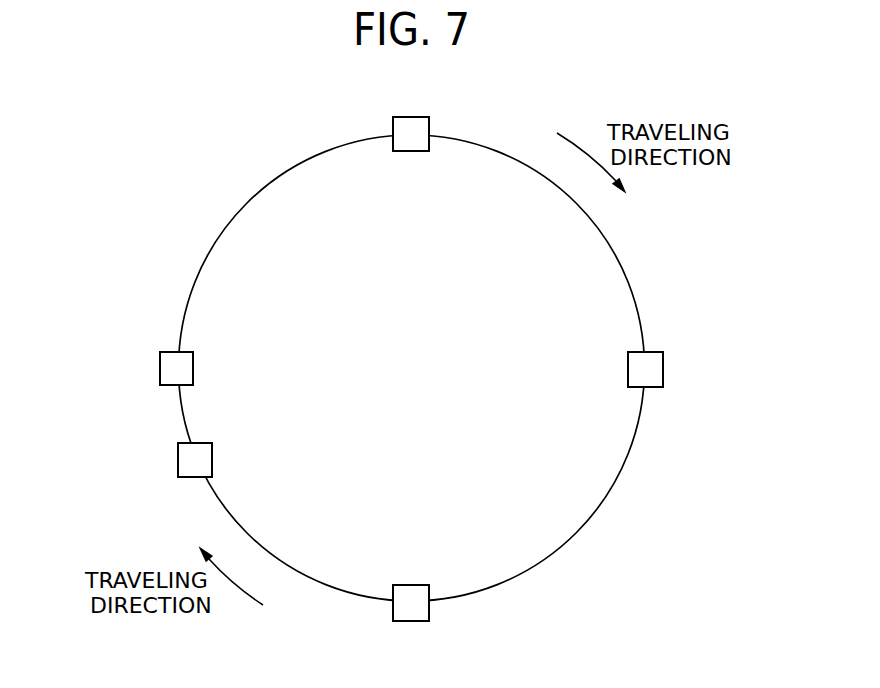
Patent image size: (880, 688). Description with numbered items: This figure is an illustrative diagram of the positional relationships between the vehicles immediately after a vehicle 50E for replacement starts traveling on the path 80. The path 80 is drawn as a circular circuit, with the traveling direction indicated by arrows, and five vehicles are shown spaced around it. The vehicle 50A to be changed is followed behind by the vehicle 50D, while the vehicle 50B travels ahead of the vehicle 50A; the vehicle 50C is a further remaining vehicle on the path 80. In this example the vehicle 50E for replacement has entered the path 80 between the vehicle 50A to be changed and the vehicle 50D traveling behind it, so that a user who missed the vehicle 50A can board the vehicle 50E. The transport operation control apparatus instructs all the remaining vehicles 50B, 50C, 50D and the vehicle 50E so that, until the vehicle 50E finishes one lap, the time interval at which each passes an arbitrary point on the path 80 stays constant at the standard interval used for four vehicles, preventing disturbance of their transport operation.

The path 80 is at (567, 545).
The vehicle to be changed 50A is at (160, 370).
The vehicle traveling ahead of the vehicle to be changed 50B is at (413, 117).
The remaining vehicle 50C is at (663, 368).
The vehicle traveling behind the vehicle to be changed 50D is at (407, 621).
The vehicle for replacement 50E is at (212, 458).